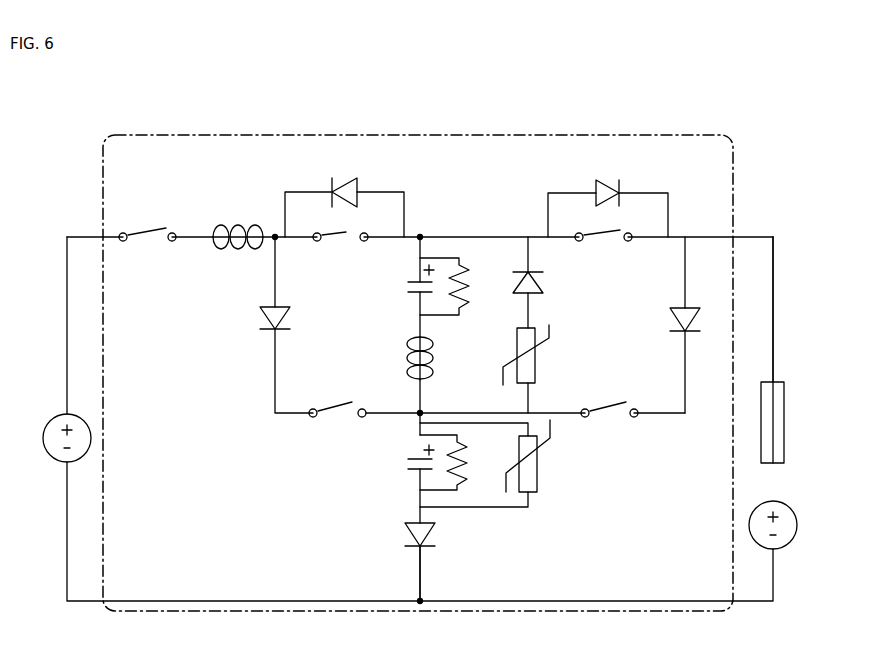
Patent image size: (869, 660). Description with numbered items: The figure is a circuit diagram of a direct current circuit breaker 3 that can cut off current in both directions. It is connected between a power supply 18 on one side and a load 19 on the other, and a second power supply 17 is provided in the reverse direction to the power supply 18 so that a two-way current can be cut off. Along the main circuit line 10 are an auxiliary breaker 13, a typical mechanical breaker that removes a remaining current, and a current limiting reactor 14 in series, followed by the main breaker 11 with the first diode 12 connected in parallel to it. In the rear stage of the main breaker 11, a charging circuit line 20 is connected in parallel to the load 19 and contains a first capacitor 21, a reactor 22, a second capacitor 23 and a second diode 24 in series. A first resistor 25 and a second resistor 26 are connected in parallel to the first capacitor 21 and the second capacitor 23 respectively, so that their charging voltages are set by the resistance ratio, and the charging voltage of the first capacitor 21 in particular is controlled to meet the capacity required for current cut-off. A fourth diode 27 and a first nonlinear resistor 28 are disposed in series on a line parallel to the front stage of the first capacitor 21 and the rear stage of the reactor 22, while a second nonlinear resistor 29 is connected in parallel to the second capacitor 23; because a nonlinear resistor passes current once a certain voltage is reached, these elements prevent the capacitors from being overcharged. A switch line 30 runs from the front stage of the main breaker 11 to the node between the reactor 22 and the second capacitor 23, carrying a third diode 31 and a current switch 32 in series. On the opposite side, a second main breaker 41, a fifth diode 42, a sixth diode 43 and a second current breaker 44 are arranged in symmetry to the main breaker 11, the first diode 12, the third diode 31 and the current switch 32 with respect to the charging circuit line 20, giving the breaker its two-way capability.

The direct current circuit breaker 3 is at (97, 154).
The main circuit line 10 is at (773, 290).
The main breaker 11 is at (344, 240).
The first diode 12 is at (343, 186).
The auxiliary breaker 13 is at (147, 231).
The current limiting reactor 14 is at (236, 231).
The second power supply 17 is at (790, 510).
The power supply 18 is at (50, 417).
The load 19 is at (784, 380).
The charging circuit line 20 is at (421, 578).
The first capacitor 21 is at (414, 285).
The reactor 22 is at (434, 364).
The second capacitor 23 is at (412, 462).
The second diode 24 is at (405, 527).
The first resistor 25 is at (468, 290).
The second resistor 26 is at (468, 468).
The fourth diode 27 is at (538, 291).
The first nonlinear resistor 28 is at (538, 354).
The second nonlinear resistor 29 is at (538, 492).
The switch line 30 is at (273, 388).
The third diode 31 is at (263, 306).
The current switch 32 is at (336, 426).
The second main breaker 41 is at (602, 242).
The fifth diode 42 is at (608, 186).
The sixth diode 43 is at (675, 307).
The second current breaker 44 is at (610, 426).